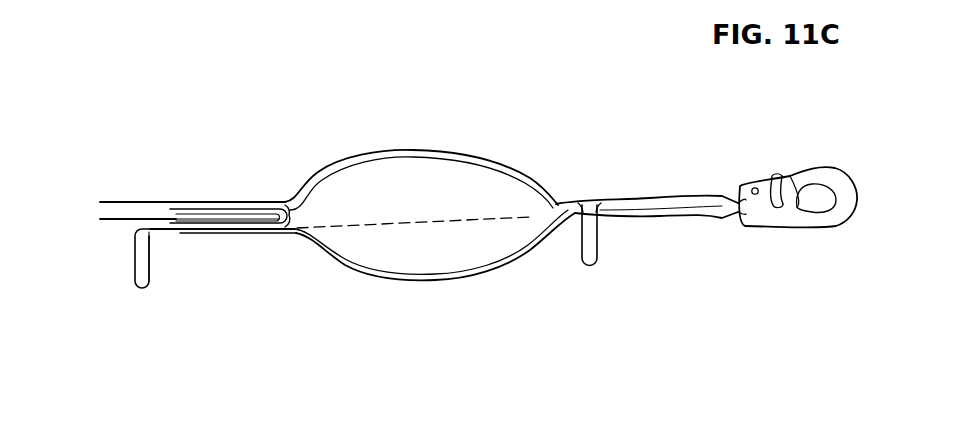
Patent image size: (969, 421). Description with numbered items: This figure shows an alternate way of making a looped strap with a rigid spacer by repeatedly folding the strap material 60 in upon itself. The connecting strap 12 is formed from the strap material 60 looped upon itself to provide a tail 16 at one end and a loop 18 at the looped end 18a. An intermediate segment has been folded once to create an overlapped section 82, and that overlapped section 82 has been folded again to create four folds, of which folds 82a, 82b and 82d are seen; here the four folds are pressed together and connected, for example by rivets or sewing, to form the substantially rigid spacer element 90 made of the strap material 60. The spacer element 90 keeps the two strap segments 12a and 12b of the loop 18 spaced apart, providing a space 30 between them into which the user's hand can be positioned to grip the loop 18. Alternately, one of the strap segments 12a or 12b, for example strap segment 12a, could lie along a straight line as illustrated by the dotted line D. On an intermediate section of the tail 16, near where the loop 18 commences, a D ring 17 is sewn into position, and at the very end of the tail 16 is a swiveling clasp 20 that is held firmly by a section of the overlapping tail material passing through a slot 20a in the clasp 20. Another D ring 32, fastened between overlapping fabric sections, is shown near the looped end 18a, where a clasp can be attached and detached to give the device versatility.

The connecting strap 12 is at (418, 224).
The strap segment 12a is at (433, 279).
The strap segment 12b is at (455, 155).
The tail 16 is at (655, 202).
The D ring 17 is at (590, 268).
The loop 18 is at (367, 146).
The looped end 18a is at (317, 175).
The clasp 20 is at (784, 241).
The slot 20a is at (728, 215).
The space 30 is at (360, 245).
The D ring 32 is at (143, 290).
The strap material 60 is at (538, 192).
The overlapped section 82 is at (298, 212).
The fold 82a is at (212, 212).
The fold 82b is at (173, 217).
The fold 82d is at (255, 228).
The spacer element 90 is at (242, 213).
The dotted line D is at (525, 218).